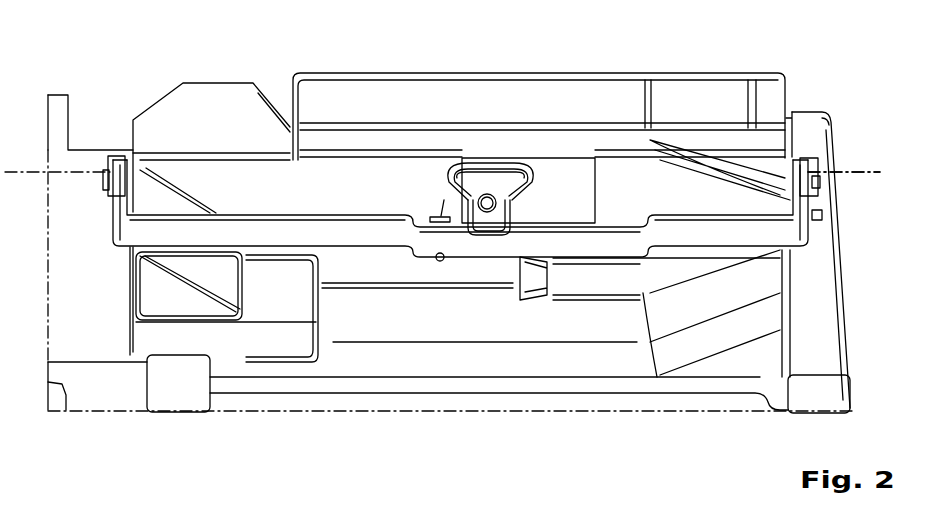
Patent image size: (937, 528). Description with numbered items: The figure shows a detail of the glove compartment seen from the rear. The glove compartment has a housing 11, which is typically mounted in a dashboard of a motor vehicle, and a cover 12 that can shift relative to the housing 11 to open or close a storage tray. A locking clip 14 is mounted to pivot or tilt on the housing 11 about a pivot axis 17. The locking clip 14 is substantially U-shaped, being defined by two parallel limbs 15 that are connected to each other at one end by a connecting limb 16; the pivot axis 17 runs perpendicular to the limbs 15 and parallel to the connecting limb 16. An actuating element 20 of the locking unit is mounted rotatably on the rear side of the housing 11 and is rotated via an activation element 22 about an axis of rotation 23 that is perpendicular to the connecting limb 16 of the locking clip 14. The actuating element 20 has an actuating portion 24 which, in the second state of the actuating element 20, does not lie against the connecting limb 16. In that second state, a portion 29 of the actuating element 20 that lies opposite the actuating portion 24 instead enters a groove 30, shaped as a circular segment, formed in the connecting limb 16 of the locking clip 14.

The housing 11 is at (583, 322).
The cover 12 is at (803, 130).
The locking clip 14 is at (265, 236).
The limbs 15 is at (120, 200).
The connecting limb 16 is at (288, 232).
The pivot axis 17 is at (863, 172).
The actuating element 20 is at (518, 162).
The activation element 22 is at (565, 182).
The axis of rotation 23 is at (486, 200).
The actuating portion 24 is at (502, 183).
The portion 29 is at (487, 223).
The groove 30 is at (500, 235).